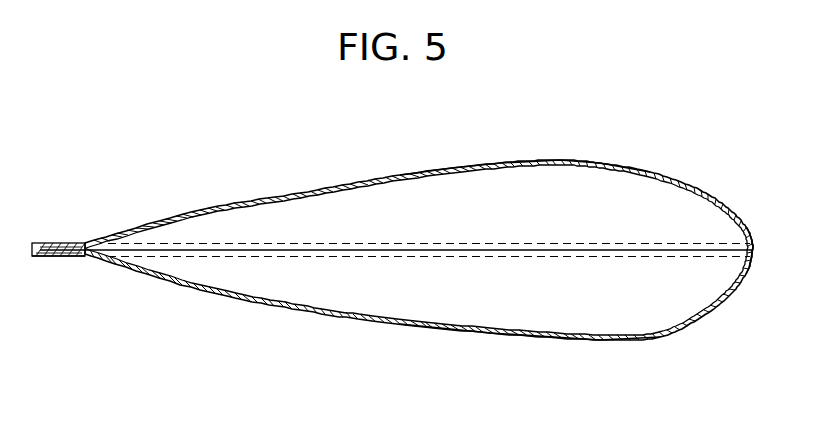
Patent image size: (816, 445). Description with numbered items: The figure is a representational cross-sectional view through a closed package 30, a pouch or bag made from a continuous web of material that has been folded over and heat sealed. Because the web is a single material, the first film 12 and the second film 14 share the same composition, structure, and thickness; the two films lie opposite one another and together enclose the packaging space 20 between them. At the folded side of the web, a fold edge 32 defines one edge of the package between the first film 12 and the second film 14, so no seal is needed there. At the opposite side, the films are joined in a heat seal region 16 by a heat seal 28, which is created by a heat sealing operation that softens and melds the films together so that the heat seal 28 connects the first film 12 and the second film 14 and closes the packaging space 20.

The first film 12 is at (526, 161).
The second film 14 is at (486, 340).
The heat seal region 16 is at (55, 245).
The packaging space 20 is at (496, 226).
The heat seal 28 is at (50, 258).
The closed package 30 is at (302, 159).
The fold edge 32 is at (757, 250).